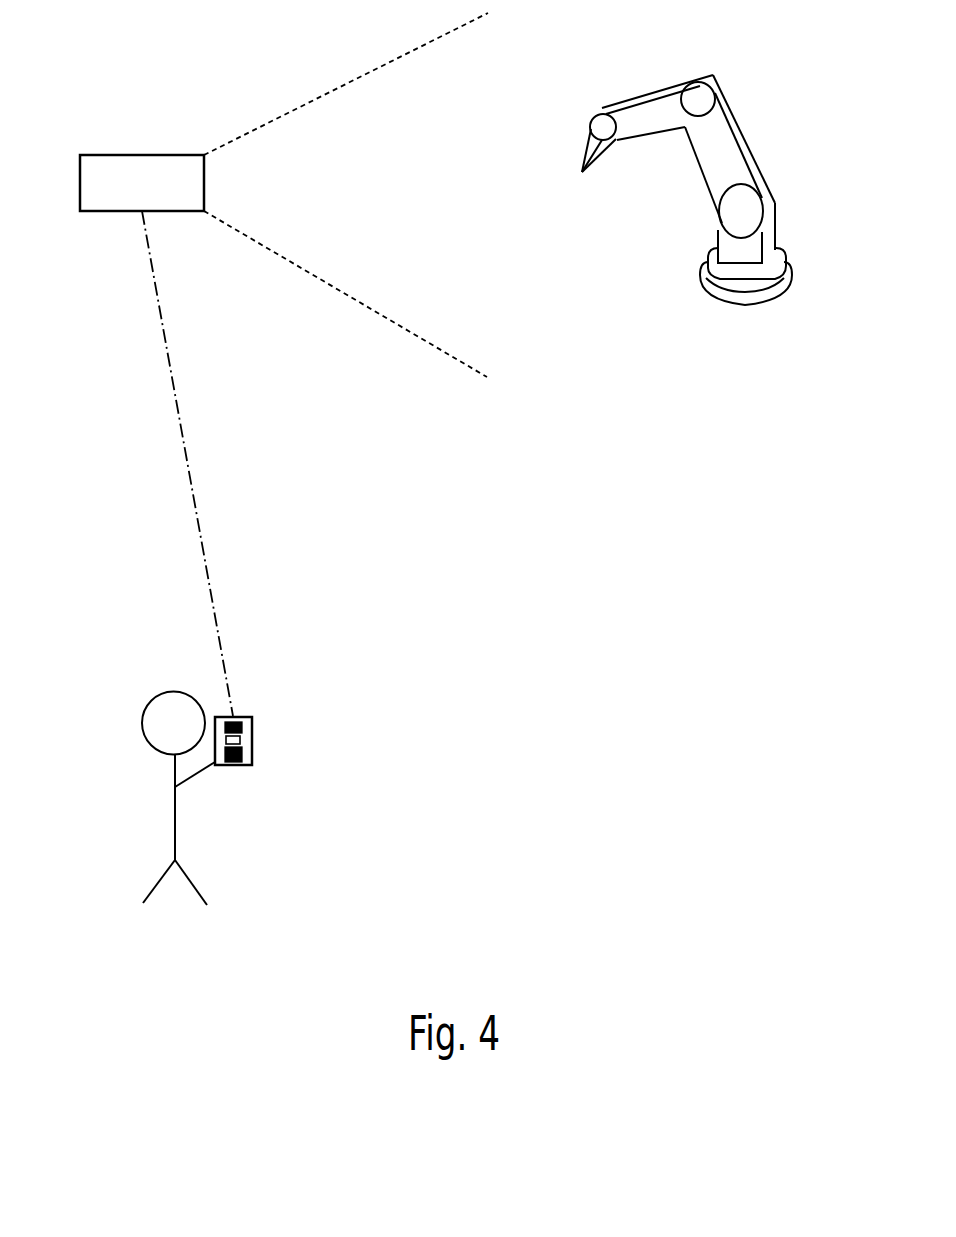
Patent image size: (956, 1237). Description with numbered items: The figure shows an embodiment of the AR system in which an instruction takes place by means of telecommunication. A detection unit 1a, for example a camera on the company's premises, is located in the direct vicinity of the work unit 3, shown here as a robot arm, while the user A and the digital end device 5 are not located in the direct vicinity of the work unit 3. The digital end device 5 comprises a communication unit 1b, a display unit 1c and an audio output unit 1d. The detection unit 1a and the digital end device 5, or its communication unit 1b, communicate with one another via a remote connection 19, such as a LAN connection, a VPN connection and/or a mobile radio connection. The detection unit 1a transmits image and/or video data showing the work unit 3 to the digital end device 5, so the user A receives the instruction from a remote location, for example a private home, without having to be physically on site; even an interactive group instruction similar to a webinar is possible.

The detection unit 1a is at (115, 155).
The communication unit 1b is at (243, 727).
The display unit 1c is at (237, 740).
The audio output unit 1d is at (252, 763).
The work unit 3 is at (713, 75).
The digital end device 5 is at (243, 703).
The remote connection 19 is at (203, 563).
The user A is at (175, 815).